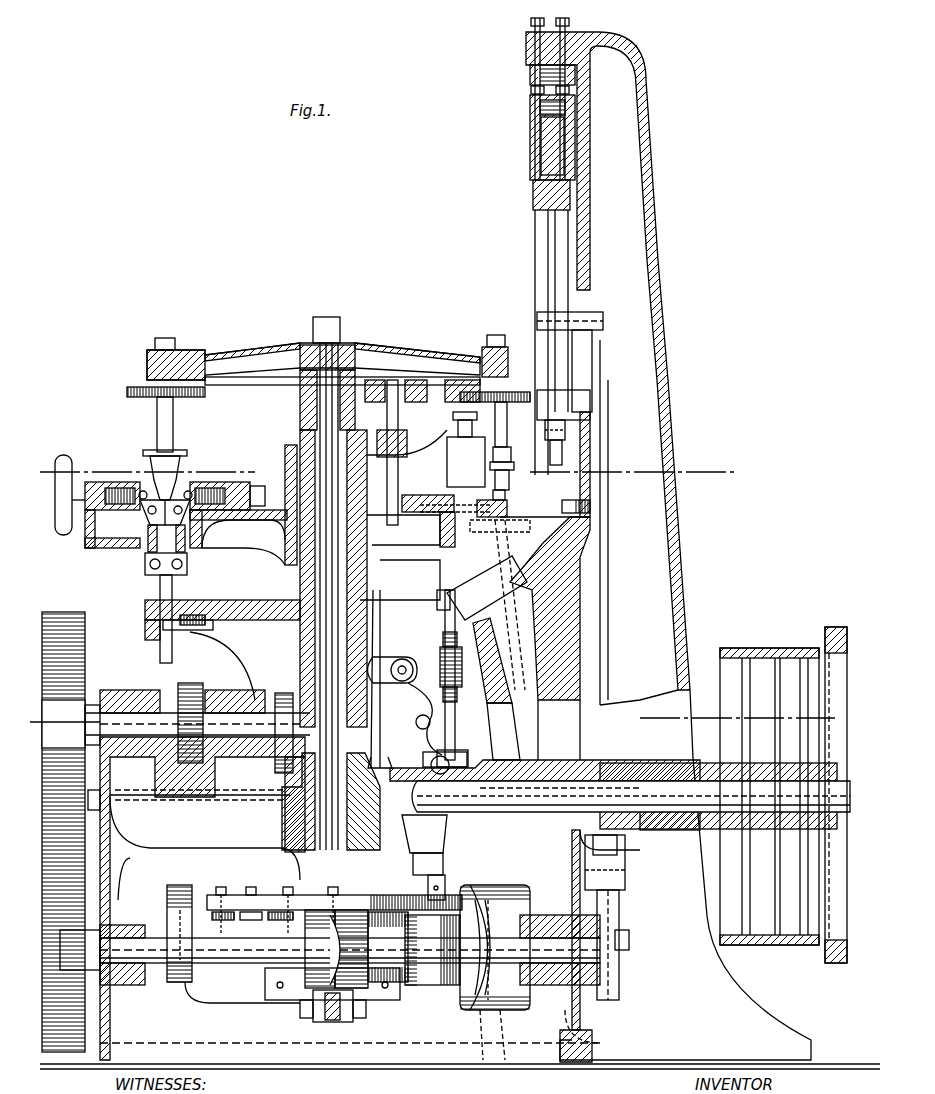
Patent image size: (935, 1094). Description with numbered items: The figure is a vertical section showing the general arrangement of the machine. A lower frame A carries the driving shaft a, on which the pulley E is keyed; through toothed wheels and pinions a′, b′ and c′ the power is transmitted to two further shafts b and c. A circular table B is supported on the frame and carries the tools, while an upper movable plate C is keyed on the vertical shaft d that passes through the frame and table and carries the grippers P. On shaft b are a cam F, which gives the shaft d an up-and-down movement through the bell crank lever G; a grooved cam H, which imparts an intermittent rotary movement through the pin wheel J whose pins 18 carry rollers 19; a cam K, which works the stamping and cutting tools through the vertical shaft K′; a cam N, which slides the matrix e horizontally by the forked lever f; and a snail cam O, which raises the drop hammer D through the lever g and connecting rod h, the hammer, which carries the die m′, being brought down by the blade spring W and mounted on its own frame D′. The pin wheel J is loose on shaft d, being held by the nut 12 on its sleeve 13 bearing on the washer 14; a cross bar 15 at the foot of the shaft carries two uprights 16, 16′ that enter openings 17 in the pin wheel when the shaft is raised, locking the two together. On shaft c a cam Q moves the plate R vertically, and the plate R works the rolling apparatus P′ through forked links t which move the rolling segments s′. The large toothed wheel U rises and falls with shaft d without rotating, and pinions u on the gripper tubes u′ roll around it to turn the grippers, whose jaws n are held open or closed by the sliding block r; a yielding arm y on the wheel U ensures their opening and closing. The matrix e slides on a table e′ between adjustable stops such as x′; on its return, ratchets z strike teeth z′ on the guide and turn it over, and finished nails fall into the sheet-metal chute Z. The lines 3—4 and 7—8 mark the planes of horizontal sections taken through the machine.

The blade spring W is at (530, 75).
The drop hammer or stamp D is at (535, 270).
The frame of the hammer D′ is at (668, 546).
The counter matrix or die m′ is at (545, 442).
The connecting rod h is at (614, 540).
The section line 3— 4 is at (640, 472).
The section line 3—4 3 is at (142, 472).
The chute Z is at (518, 638).
The teeth z′ is at (510, 605).
The table e′ is at (505, 538).
The matrix or anvil e is at (507, 503).
The ratchets z is at (510, 503).
The adjustable stop x′ is at (576, 497).
The forked lever f is at (471, 678).
The flexible or yielding arm y is at (466, 449).
The vertical shaft d is at (355, 583).
The nut 12 is at (390, 549).
The sleeve 13 is at (331, 801).
The vertical shaft K′ is at (418, 745).
The driving shaft a is at (620, 795).
The section line 7— 8 is at (743, 712).
The pulley E is at (772, 652).
The upper movable plate C is at (260, 357).
The large toothed wheel U is at (245, 386).
The pinions u is at (127, 391).
The vertical tube u′ is at (343, 424).
The sliding block r is at (336, 459).
The grippers P is at (327, 473).
The movable jointed jaws n is at (167, 494).
The rolling apparatus P′ is at (165, 526).
The forked links t is at (148, 545).
The plate R is at (278, 605).
The slide s′ is at (112, 529).
The circular table B is at (243, 505).
The toothed wheel a′ is at (63, 832).
The toothed wheel c′ is at (71, 724).
The section line 7—8 7 is at (64, 722).
The shaft c is at (197, 712).
The cam Q is at (284, 733).
The lower frame A is at (202, 898).
The washer 14 is at (285, 795).
The shaft b is at (350, 950).
The toothed wheel b′ is at (80, 950).
The cam F is at (179, 933).
The pin wheel J is at (268, 895).
The openings 17 is at (416, 892).
The pins 18 is at (280, 896).
The rollers 19 is at (246, 923).
The uprights 16 is at (280, 928).
The grooved cam H is at (349, 949).
The clutch member 16′ is at (385, 947).
The cam K is at (432, 950).
The cross bar 15 is at (372, 992).
The bell crank lever G is at (333, 1022).
The cam N is at (495, 947).
The snail cam O is at (613, 945).
The lever g is at (612, 862).